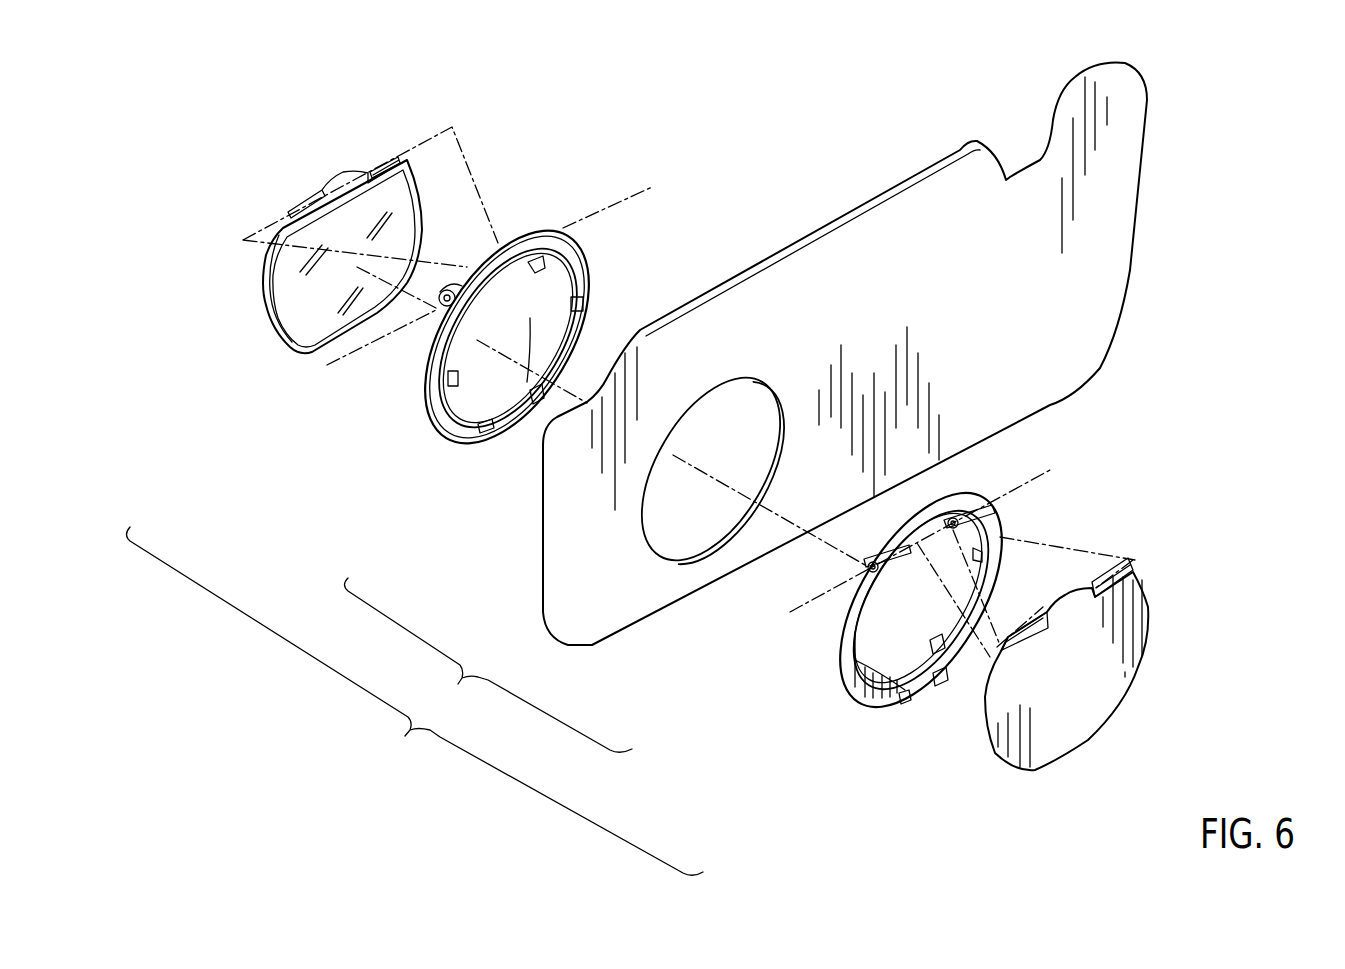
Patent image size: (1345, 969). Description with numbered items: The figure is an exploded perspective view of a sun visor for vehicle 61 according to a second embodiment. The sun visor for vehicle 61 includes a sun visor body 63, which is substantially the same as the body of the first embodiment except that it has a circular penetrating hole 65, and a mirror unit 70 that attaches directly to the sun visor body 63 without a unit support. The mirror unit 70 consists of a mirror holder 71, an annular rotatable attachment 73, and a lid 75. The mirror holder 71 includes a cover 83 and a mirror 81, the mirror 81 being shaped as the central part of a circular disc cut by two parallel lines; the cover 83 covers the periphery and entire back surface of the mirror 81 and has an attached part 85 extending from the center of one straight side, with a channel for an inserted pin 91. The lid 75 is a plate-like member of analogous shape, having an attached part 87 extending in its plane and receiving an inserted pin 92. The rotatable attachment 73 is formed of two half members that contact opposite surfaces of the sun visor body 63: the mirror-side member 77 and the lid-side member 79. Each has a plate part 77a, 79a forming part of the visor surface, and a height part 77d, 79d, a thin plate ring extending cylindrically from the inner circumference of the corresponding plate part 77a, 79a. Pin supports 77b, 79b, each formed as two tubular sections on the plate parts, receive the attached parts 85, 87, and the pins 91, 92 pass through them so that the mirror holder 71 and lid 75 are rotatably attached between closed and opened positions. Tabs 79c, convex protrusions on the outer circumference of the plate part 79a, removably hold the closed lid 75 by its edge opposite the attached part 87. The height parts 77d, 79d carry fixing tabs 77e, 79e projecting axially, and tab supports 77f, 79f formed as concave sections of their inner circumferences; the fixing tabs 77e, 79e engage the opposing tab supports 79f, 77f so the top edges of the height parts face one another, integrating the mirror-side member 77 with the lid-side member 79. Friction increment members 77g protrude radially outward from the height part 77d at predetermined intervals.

The sun visor for vehicle 61 is at (261, 818).
The sun visor body 63 is at (1100, 266).
The penetrating hole 65 is at (728, 380).
The mirror unit 70 is at (415, 701).
The mirror holder 71 is at (311, 287).
The rotatable attachment 73 is at (489, 665).
The lid 75 is at (965, 679).
The mirror-side member 77 is at (518, 365).
The plate part 77a is at (573, 252).
The pin support 77b is at (458, 292).
The height part 77d is at (584, 303).
The fixing tab 77e is at (485, 425).
The tab support 77f is at (571, 305).
The friction increment member 77g is at (520, 232).
The lid-side member 79 is at (876, 609).
The plate part 79a is at (1000, 527).
The pin support 79b is at (963, 510).
The tab 79c is at (937, 688).
The height part 79d is at (977, 600).
The fixing tab 79e is at (982, 557).
The tab support 79f is at (872, 660).
The mirror 81 is at (398, 195).
The cover 83 is at (265, 290).
The attached part 85 is at (347, 190).
The attached part 87 is at (1095, 582).
The pin 91 is at (397, 153).
The pin 92 is at (1130, 567).